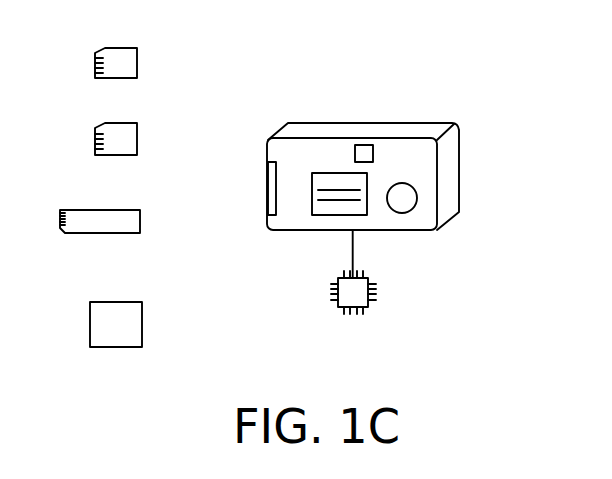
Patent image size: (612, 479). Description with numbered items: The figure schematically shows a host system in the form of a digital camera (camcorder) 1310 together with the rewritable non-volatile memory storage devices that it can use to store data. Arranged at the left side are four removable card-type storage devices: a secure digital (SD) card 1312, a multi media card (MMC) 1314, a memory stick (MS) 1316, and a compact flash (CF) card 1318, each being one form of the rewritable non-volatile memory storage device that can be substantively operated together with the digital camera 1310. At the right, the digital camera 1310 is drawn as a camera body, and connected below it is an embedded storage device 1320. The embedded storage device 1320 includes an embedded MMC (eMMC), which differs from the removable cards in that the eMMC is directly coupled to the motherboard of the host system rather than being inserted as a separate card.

The digital camera 1310 is at (459, 162).
The secure digital (SD) card 1312 is at (137, 53).
The multi media card (MMC) 1314 is at (137, 130).
The memory stick (MS) 1316 is at (140, 220).
The compact flash (CF) card 1318 is at (142, 317).
The embedded storage device 1320 is at (376, 293).